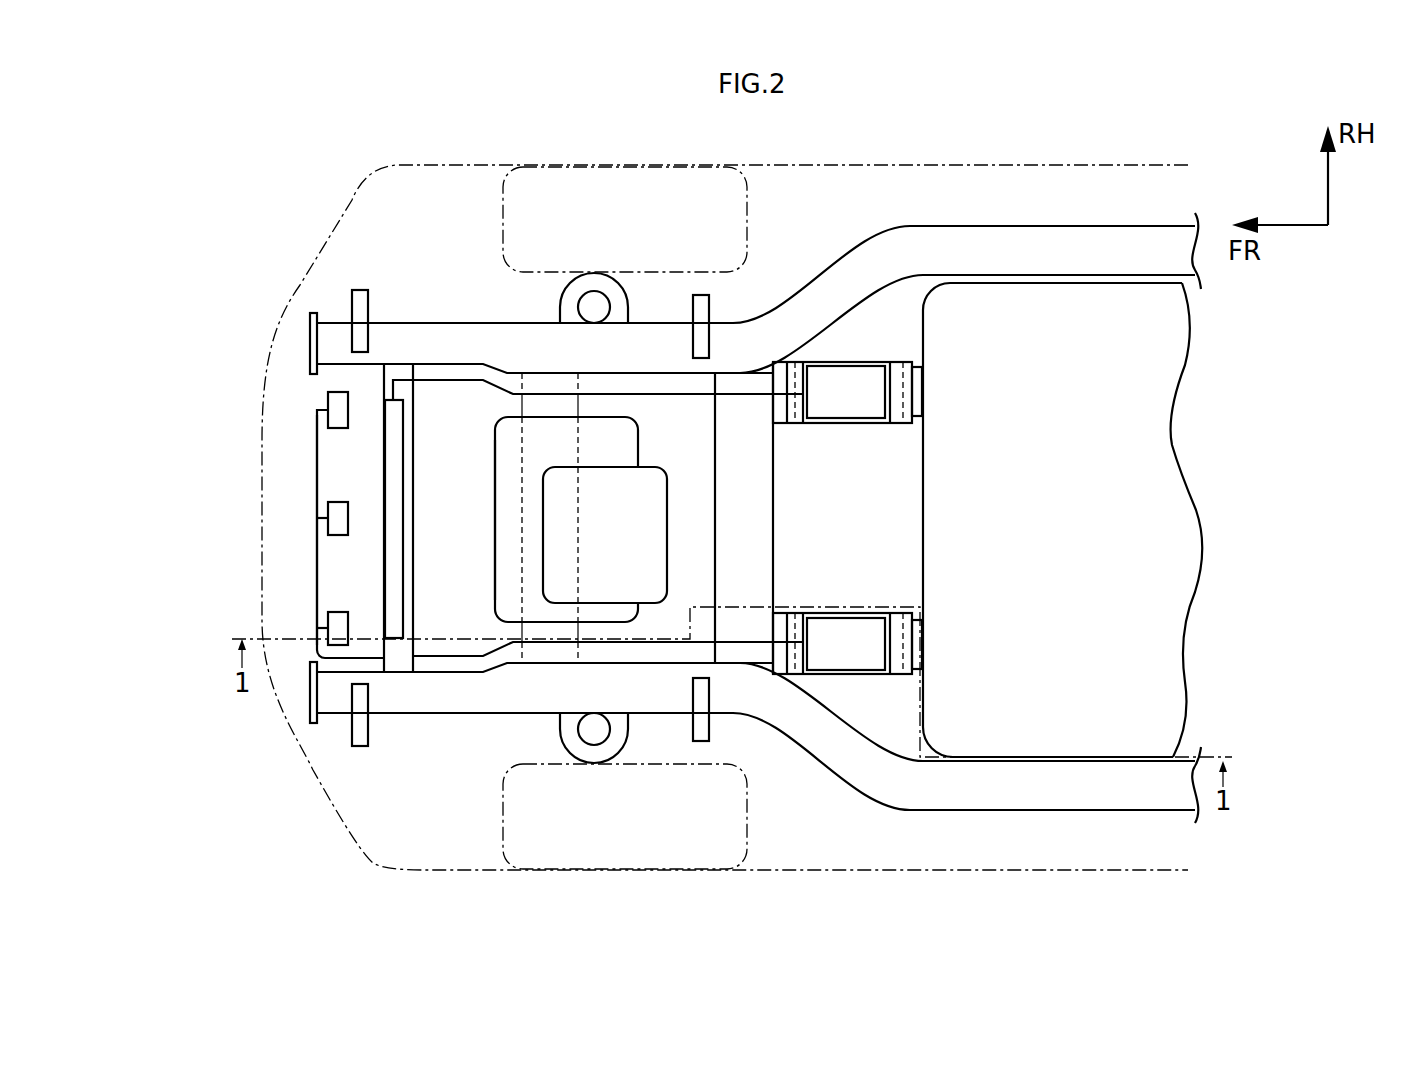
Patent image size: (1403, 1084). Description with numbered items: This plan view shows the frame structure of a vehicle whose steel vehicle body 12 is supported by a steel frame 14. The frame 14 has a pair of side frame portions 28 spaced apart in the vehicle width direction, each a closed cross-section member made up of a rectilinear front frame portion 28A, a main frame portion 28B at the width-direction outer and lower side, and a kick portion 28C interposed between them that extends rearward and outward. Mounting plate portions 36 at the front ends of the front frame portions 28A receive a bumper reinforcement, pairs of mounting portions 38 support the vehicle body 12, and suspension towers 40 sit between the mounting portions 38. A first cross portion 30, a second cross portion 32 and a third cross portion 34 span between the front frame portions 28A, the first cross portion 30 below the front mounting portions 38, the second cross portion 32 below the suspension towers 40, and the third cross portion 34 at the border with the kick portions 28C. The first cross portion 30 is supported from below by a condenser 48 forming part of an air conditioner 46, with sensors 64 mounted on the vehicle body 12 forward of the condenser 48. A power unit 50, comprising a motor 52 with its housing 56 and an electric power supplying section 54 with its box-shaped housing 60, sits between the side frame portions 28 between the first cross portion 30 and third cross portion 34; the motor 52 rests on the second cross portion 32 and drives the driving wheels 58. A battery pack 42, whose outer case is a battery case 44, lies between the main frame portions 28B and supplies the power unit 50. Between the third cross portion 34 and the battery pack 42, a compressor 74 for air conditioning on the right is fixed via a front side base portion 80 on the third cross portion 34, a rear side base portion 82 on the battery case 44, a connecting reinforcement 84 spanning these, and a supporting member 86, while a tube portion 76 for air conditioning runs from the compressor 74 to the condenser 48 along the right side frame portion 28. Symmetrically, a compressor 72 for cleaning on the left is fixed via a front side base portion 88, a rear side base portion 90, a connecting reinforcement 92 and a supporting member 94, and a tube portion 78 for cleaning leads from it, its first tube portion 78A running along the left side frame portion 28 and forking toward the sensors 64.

The vehicle body 12 is at (447, 873).
The frame 14 is at (416, 783).
The side frame portion 28 is at (910, 222).
The front frame portion 28A is at (388, 338).
The main frame portion 28B is at (1038, 236).
The kick portion 28C is at (797, 305).
The first cross portion 30 is at (410, 423).
The second cross portion 32 is at (570, 407).
The third cross portion 34 is at (760, 538).
The mounting plate portion 36 is at (310, 332).
The mounting portion 38 is at (357, 292).
The suspension tower 40 is at (565, 300).
The battery pack 42 is at (1118, 520).
The battery case 44 is at (1165, 370).
The air conditioner 46 is at (439, 509).
The condenser 48 is at (400, 506).
The power unit 50 is at (660, 454).
The motor 52 is at (457, 538).
The electric power supplying section 54 is at (605, 535).
The housing 56 is at (493, 570).
The driving wheel 58 is at (502, 213).
The housing 60 is at (588, 573).
The sensor 64 is at (338, 420).
The compressor for cleaning 72 is at (848, 632).
The compressor for air conditioning 74 is at (843, 396).
The tube portion for air conditioning 76 is at (740, 396).
The tube portion for cleaning 78 is at (308, 562).
The first tube portion 78A is at (317, 472).
The front side base portion 80 is at (782, 370).
The rear side base portion 82 is at (920, 383).
The connecting reinforcement 84 is at (900, 363).
The supporting member 86 is at (828, 368).
The front side base portion 88 is at (777, 625).
The rear side base portion 90 is at (920, 644).
The connecting reinforcement 92 is at (903, 678).
The supporting member 94 is at (852, 680).